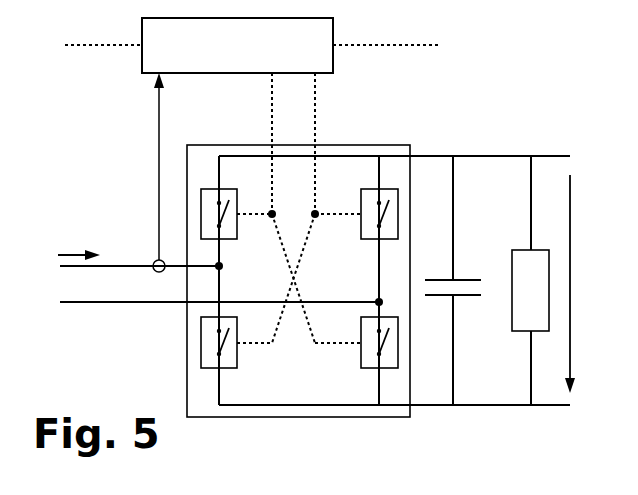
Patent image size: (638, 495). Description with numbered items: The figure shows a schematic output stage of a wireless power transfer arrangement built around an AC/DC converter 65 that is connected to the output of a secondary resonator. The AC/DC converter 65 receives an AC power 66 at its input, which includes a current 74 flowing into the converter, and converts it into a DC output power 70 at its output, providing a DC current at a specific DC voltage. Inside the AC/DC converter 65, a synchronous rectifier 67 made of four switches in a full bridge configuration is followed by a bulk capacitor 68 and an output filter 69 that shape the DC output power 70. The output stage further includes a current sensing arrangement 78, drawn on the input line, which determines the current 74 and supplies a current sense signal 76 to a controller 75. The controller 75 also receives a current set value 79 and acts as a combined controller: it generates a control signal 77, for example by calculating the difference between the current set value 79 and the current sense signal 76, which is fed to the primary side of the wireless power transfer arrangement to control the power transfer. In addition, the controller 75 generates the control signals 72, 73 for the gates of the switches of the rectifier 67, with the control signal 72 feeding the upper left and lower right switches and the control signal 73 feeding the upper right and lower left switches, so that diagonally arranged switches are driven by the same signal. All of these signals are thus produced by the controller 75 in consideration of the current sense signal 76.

The AC/DC converter 65 is at (172, 350).
The AC power 66 is at (219, 290).
The synchronous rectifier 67 is at (377, 144).
The bulk capacitor 68 is at (466, 278).
The output filter 69 is at (514, 248).
The DC output power 70 is at (571, 242).
The control signal 72 is at (270, 108).
The control signal 73 is at (316, 108).
The current 74 is at (78, 250).
The controller 75 is at (237, 45).
The current sense signal 76 is at (157, 130).
The control signal 77 is at (436, 44).
The current sensing arrangement 78 is at (156, 260).
The current set value 79 is at (103, 44).